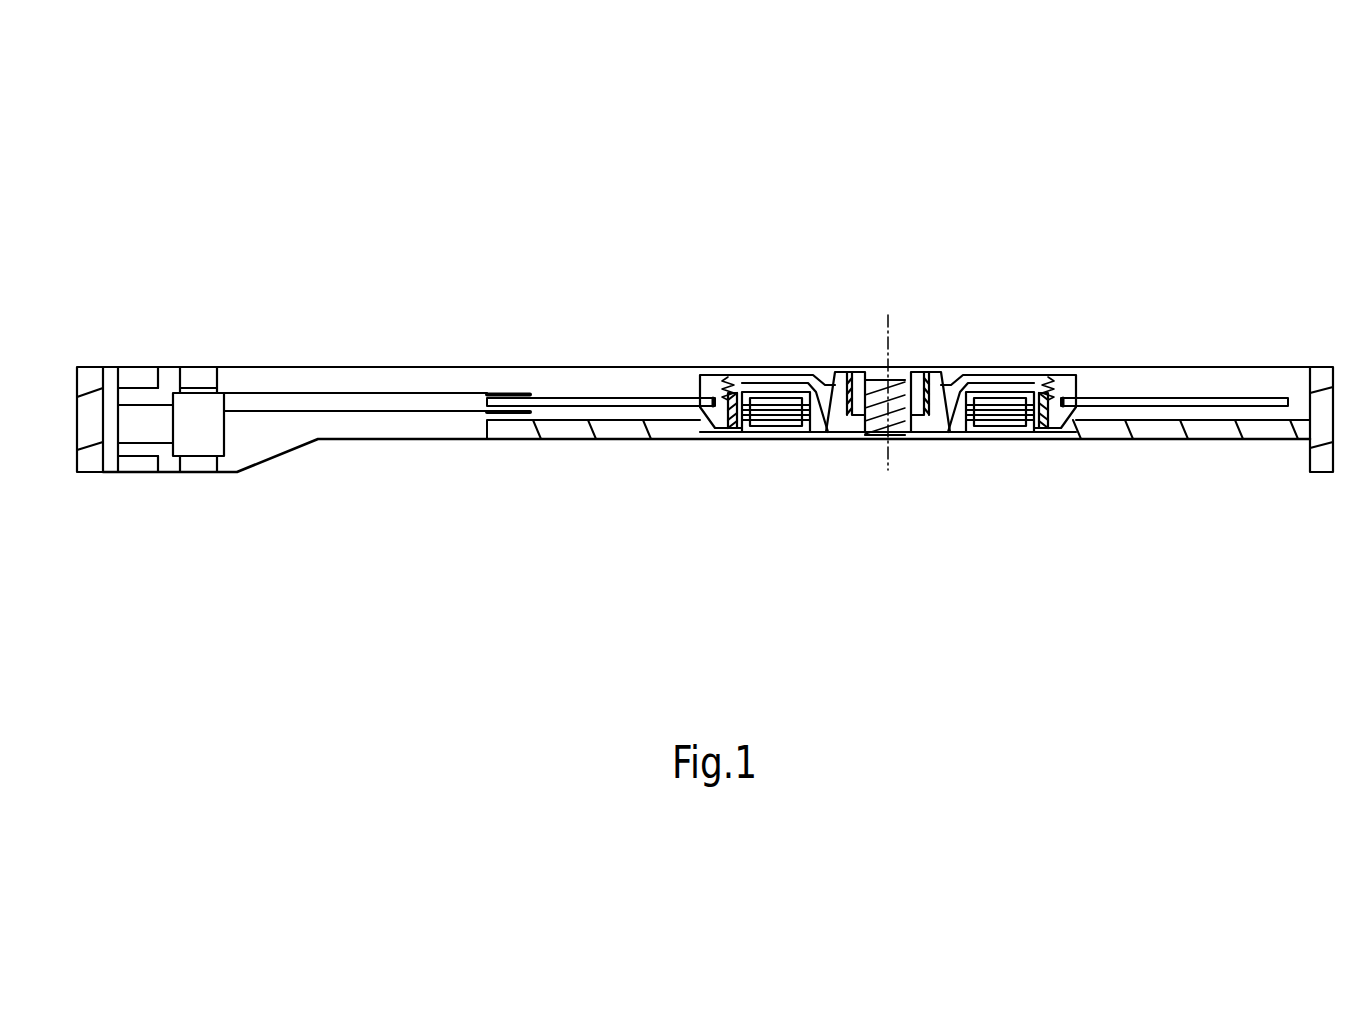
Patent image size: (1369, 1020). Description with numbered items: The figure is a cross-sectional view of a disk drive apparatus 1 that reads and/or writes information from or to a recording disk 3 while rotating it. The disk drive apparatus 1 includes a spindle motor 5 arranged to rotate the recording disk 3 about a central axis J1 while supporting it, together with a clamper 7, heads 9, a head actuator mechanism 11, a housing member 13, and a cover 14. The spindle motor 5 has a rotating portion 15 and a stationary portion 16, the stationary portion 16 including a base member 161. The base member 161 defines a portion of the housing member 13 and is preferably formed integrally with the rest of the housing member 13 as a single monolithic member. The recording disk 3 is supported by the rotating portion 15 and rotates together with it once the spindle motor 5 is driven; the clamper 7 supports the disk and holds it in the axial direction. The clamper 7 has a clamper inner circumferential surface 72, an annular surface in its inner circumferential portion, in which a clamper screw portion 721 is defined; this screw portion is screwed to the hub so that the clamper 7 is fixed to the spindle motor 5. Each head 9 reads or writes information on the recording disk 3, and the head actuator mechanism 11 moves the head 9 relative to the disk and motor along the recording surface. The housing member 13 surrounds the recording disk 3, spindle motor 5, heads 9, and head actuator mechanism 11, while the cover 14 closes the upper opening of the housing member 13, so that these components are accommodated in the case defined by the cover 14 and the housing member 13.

The disk drive apparatus 1 is at (1167, 232).
The head actuator mechanism 11 is at (325, 350).
The housing member 13 is at (398, 448).
The cover 14 is at (435, 367).
The head 9 is at (513, 392).
The recording disk 3 is at (1122, 398).
The spindle motor 5 is at (945, 385).
The clamper 7 is at (1065, 375).
The clamper inner circumferential surface 72 is at (1032, 375).
The clamper screw portion 721 is at (741, 375).
The rotating portion 15 is at (765, 372).
The stationary portion 16 is at (915, 447).
The base member 161 is at (1000, 438).
The central axis J1 is at (887, 337).